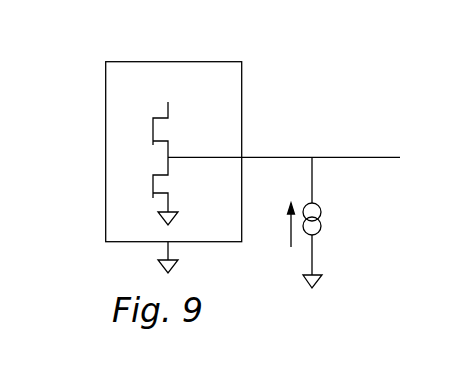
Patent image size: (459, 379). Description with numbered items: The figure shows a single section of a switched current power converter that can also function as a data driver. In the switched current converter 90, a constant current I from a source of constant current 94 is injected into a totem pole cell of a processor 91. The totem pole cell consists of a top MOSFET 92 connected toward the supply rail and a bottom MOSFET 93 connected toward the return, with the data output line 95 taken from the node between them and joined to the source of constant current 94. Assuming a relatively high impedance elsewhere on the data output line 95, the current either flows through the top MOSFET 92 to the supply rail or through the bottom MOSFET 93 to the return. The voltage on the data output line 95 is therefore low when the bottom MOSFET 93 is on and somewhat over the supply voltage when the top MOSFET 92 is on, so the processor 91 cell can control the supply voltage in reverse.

The switched current converter 90 is at (140, 23).
The processor 91 is at (98, 87).
The top MOSFET 92 is at (137, 132).
The bottom MOSFET 93 is at (153, 184).
The source of constant current 94 is at (338, 203).
The data out line 95 is at (295, 150).